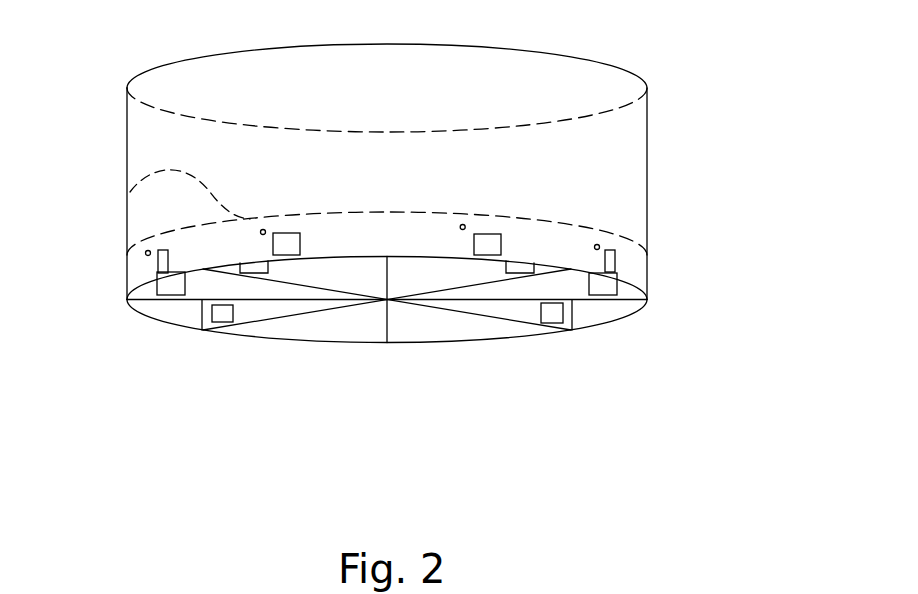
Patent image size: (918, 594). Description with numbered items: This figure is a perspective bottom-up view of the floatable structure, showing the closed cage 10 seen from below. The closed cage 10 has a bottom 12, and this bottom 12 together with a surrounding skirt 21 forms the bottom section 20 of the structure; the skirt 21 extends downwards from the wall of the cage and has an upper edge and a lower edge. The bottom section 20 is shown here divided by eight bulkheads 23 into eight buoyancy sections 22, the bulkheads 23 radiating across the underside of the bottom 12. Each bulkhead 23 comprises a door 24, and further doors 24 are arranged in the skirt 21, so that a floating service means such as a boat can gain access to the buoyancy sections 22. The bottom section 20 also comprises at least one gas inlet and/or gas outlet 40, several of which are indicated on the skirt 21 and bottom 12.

The closed cage 10 is at (608, 170).
The bottom 12 is at (130, 190).
The bottom section 20 is at (465, 329).
The skirt 21 is at (650, 275).
The buoyancy sections 22 is at (600, 303).
The bulkheads 23 is at (335, 272).
The doors 24 is at (490, 243).
The gas inlet and/or gas outlet 40 is at (148, 255).